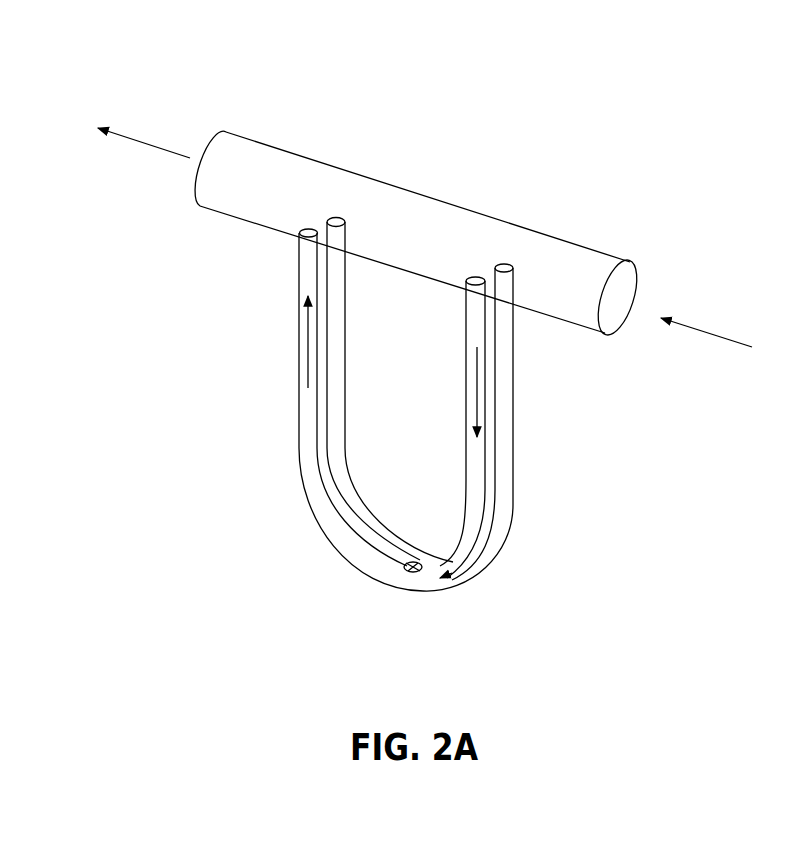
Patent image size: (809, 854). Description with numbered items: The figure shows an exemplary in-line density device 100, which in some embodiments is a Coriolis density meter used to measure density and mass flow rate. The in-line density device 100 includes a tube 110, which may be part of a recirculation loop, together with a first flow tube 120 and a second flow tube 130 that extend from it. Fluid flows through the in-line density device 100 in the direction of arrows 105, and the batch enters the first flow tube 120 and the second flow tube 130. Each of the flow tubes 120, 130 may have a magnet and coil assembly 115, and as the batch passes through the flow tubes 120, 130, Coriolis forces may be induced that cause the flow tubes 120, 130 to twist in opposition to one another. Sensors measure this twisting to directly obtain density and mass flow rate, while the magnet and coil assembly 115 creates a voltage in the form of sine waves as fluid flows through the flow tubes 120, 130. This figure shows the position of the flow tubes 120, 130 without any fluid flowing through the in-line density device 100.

The in-line density device 100 is at (597, 103).
The arrows 105 is at (142, 143).
The tube 110 is at (447, 203).
The magnet and coil assembly 115 is at (407, 572).
The first flow tube 120 is at (305, 458).
The second flow tube 130 is at (505, 433).